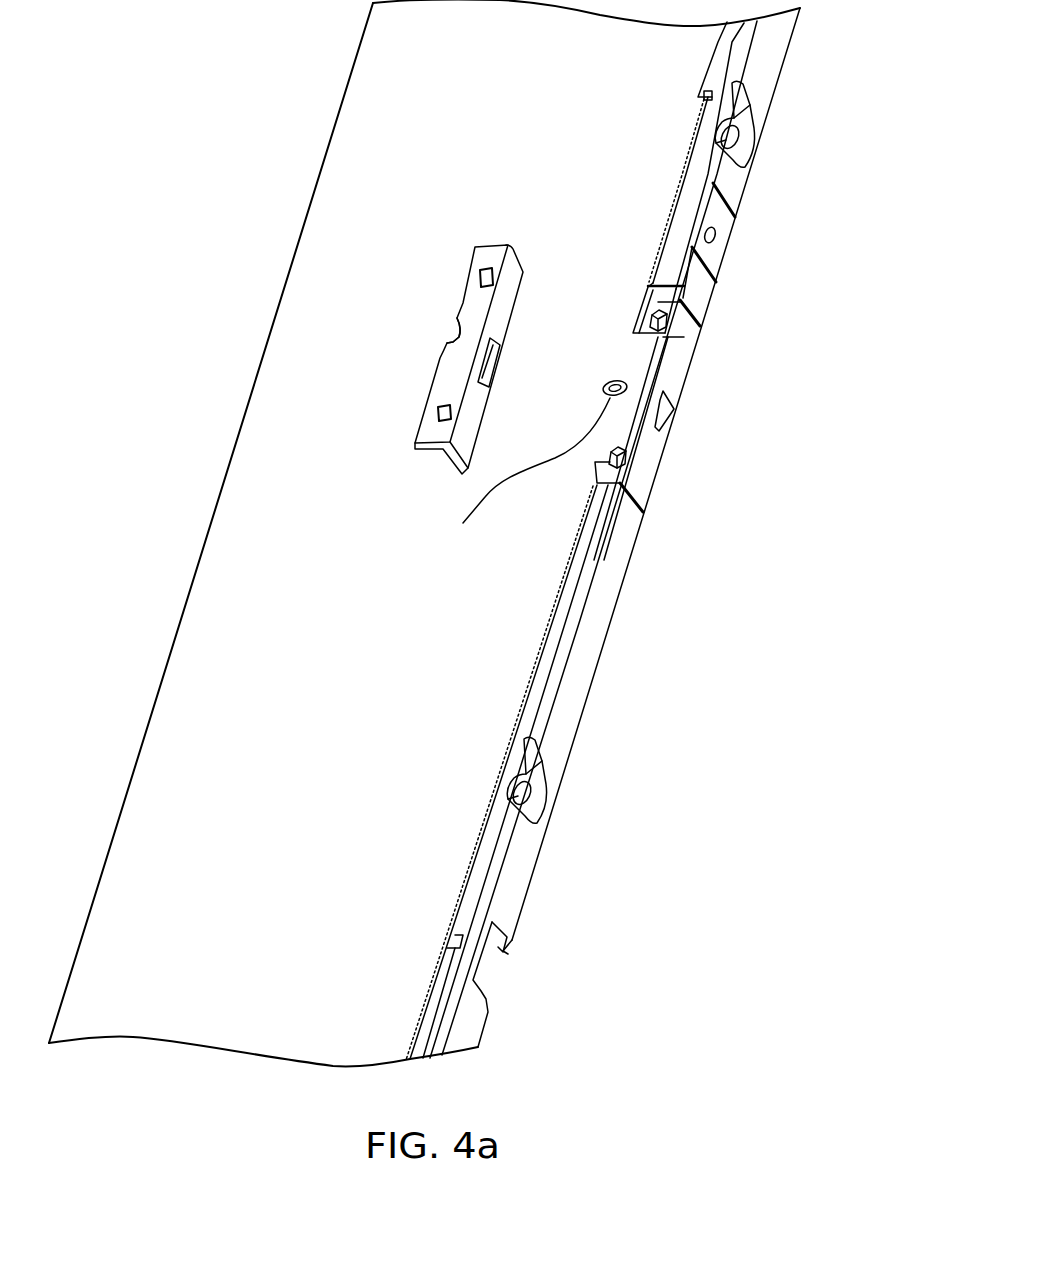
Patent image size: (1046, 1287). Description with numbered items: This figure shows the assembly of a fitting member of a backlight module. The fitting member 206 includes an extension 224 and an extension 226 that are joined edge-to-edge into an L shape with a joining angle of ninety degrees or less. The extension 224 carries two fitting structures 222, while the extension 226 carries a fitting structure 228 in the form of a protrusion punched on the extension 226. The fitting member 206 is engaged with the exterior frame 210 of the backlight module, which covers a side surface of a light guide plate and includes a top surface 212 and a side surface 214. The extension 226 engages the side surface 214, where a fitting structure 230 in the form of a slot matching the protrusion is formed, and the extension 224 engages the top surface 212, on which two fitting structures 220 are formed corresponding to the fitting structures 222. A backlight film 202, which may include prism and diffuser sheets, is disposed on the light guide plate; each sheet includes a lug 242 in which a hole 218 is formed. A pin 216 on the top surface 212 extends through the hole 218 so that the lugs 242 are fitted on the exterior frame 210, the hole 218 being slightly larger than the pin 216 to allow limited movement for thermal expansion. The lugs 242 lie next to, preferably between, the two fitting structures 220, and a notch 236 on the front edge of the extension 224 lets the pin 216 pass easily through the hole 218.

The backlight film 202 is at (262, 423).
The fitting member 206 is at (462, 322).
The exterior frame 210 is at (700, 290).
The top surface 212 is at (673, 316).
The side surface 214 is at (678, 351).
The pin 216 is at (604, 393).
The hole 218 is at (526, 476).
The fitting structures 220 is at (633, 465).
The fitting structures 222 is at (484, 273).
The extension 224 is at (440, 378).
The extension 226 is at (518, 280).
The fitting structure 228 is at (485, 366).
The fitting structure 230 is at (673, 412).
The notch 236 is at (459, 321).
The lug 242 is at (643, 438).